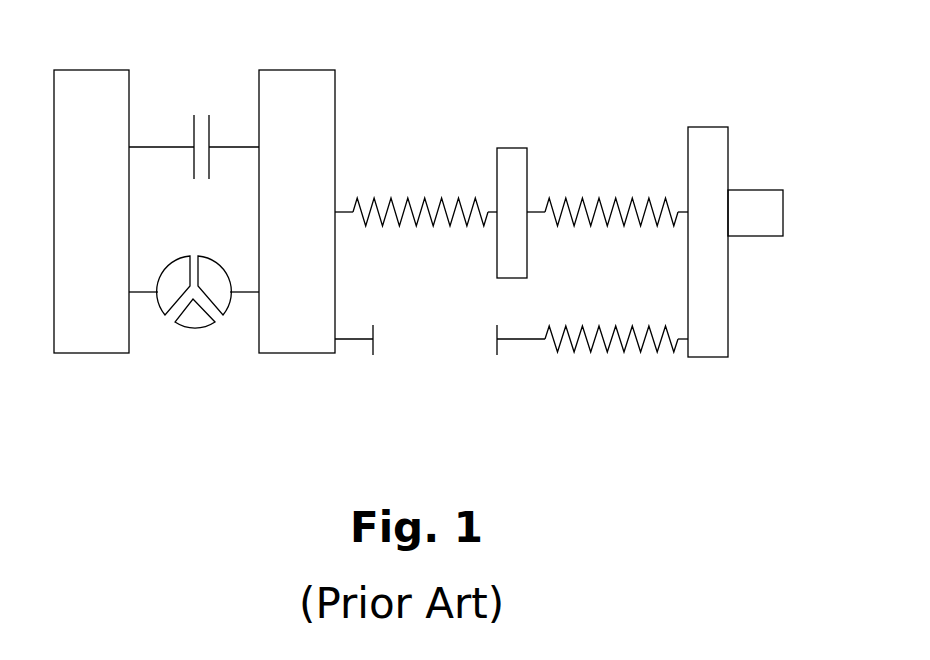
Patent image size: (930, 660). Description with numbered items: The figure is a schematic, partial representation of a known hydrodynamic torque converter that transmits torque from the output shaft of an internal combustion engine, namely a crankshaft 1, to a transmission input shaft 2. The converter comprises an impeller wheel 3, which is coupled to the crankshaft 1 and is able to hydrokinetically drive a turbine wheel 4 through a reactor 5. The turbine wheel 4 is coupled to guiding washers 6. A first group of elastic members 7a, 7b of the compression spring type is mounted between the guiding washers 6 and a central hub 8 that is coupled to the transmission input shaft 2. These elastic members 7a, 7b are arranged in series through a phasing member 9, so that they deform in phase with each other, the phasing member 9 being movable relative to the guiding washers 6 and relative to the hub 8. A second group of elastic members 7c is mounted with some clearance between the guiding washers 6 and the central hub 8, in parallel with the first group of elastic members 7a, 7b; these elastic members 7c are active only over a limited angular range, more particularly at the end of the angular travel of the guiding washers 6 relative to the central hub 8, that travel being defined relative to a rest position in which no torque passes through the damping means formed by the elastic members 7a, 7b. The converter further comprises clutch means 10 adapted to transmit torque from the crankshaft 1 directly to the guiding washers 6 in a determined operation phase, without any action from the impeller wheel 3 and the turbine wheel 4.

The crankshaft 1 is at (93, 323).
The transmission input shaft 2 is at (748, 203).
The impeller wheel 3 is at (167, 298).
The turbine wheel 4 is at (223, 298).
The reactor 5 is at (193, 315).
The guiding washers 6 is at (311, 105).
The elastic member of the first group 7a is at (415, 200).
The elastic member of the first group 7b is at (592, 197).
The elastic member of the second group 7c is at (620, 345).
The central hub 8 is at (702, 140).
The phasing member 9 is at (510, 157).
The clutch means 10 is at (202, 110).